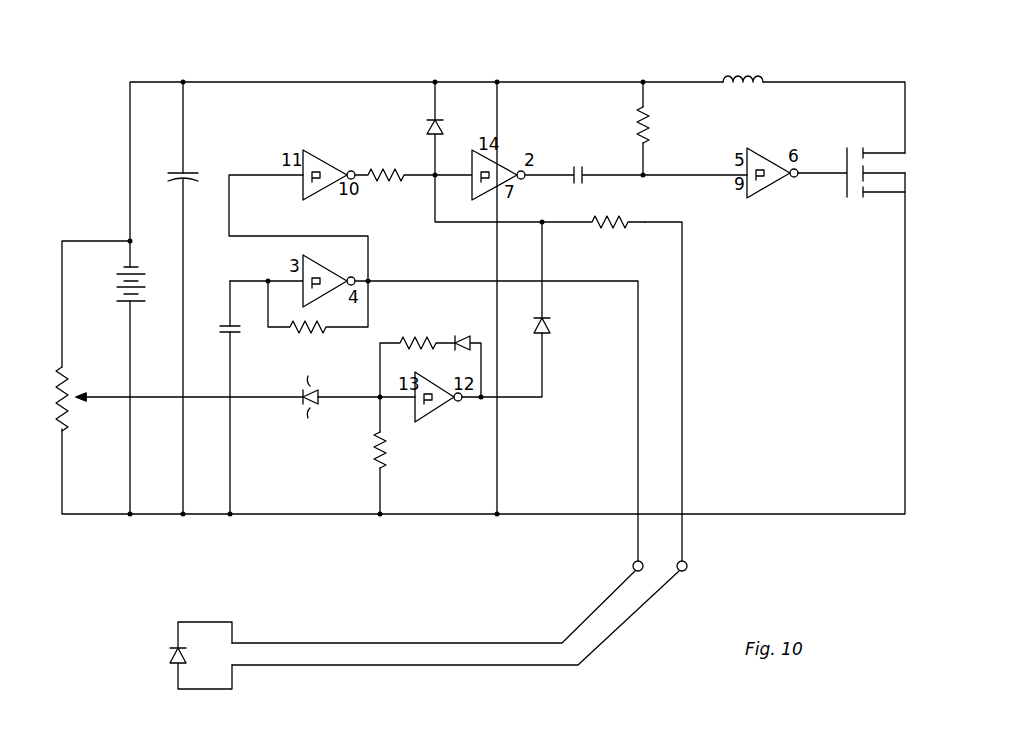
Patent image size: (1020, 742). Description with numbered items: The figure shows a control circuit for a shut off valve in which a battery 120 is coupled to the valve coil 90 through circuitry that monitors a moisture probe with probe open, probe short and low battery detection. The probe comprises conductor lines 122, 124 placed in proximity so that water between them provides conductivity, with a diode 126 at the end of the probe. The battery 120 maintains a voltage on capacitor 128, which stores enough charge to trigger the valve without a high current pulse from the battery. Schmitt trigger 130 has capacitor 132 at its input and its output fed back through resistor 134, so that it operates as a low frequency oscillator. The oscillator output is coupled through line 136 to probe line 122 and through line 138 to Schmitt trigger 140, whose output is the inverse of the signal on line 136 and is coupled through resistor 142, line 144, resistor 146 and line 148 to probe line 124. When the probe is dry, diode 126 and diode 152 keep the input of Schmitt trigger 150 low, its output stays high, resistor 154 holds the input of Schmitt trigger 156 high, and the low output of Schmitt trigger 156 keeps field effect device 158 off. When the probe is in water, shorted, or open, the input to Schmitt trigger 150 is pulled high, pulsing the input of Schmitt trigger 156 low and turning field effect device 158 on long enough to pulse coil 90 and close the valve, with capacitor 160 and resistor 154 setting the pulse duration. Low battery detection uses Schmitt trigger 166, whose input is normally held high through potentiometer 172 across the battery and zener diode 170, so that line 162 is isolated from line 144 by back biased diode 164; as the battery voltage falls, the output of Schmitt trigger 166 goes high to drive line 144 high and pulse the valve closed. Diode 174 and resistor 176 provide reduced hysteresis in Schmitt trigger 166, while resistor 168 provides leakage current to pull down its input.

The coil 90 is at (732, 78).
The battery 120 is at (140, 306).
The conductor line 122 is at (372, 641).
The conductor line 124 is at (346, 667).
The diode 126 is at (174, 649).
The capacitor 128 is at (180, 172).
The Schmitt trigger 130 is at (345, 272).
The capacitor 132 is at (219, 317).
The resistor 134 is at (311, 338).
The line 136 is at (638, 373).
The line 138 is at (232, 171).
The Schmitt trigger 140 is at (331, 149).
The resistor 142 is at (384, 168).
The line 144 is at (435, 221).
The resistor 146 is at (618, 218).
The line 148 is at (682, 350).
The Schmitt trigger 150 is at (511, 164).
The diode 152 is at (440, 123).
The resistor 154 is at (650, 138).
The Schmitt trigger 156 is at (765, 195).
The field effect device 158 is at (846, 151).
The capacitor 160 is at (576, 165).
The line 162 is at (548, 403).
The diode 164 is at (551, 325).
The Schmitt trigger 166 is at (440, 411).
The resistor 168 is at (378, 461).
The zener diode 170 is at (302, 407).
The potentiometer 172 is at (70, 376).
The diode 174 is at (460, 336).
The resistor 176 is at (403, 343).